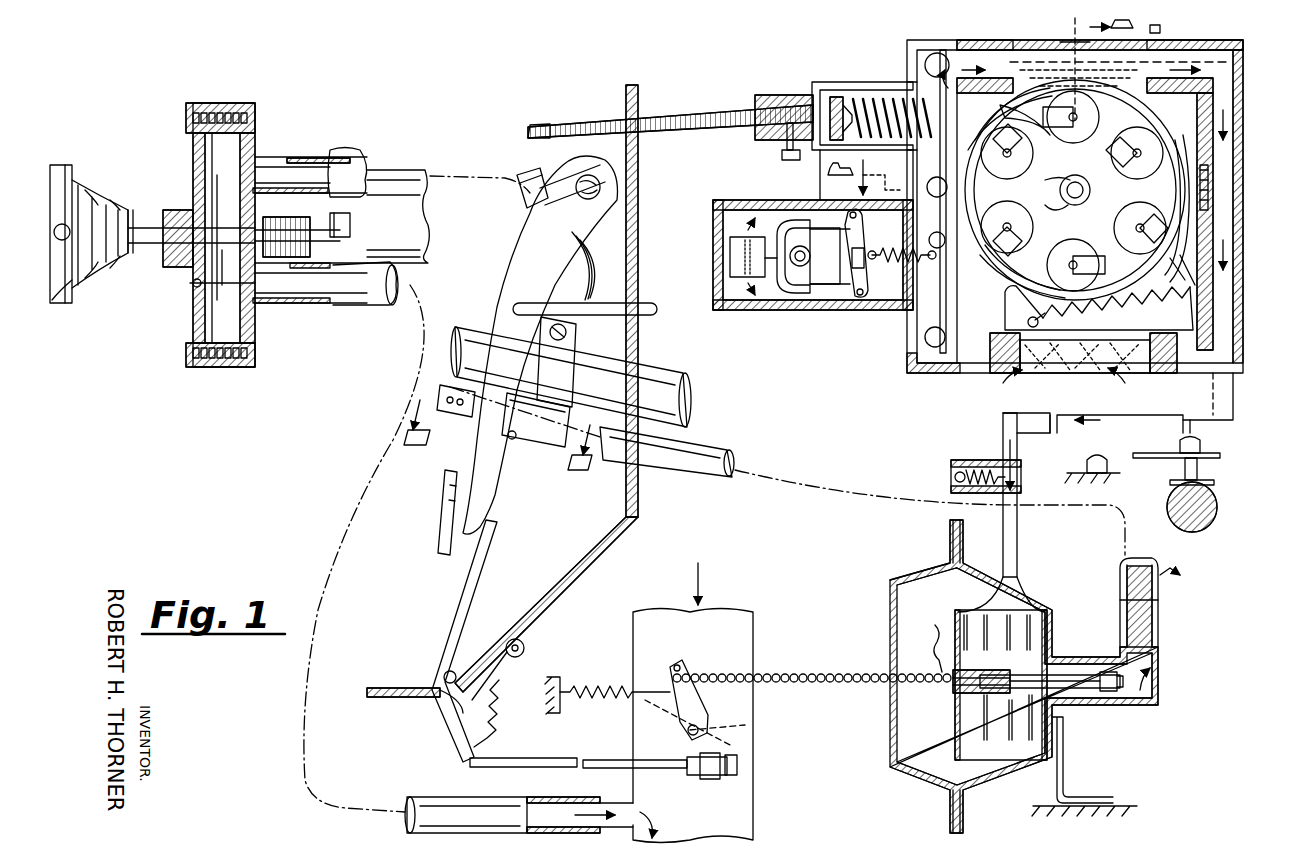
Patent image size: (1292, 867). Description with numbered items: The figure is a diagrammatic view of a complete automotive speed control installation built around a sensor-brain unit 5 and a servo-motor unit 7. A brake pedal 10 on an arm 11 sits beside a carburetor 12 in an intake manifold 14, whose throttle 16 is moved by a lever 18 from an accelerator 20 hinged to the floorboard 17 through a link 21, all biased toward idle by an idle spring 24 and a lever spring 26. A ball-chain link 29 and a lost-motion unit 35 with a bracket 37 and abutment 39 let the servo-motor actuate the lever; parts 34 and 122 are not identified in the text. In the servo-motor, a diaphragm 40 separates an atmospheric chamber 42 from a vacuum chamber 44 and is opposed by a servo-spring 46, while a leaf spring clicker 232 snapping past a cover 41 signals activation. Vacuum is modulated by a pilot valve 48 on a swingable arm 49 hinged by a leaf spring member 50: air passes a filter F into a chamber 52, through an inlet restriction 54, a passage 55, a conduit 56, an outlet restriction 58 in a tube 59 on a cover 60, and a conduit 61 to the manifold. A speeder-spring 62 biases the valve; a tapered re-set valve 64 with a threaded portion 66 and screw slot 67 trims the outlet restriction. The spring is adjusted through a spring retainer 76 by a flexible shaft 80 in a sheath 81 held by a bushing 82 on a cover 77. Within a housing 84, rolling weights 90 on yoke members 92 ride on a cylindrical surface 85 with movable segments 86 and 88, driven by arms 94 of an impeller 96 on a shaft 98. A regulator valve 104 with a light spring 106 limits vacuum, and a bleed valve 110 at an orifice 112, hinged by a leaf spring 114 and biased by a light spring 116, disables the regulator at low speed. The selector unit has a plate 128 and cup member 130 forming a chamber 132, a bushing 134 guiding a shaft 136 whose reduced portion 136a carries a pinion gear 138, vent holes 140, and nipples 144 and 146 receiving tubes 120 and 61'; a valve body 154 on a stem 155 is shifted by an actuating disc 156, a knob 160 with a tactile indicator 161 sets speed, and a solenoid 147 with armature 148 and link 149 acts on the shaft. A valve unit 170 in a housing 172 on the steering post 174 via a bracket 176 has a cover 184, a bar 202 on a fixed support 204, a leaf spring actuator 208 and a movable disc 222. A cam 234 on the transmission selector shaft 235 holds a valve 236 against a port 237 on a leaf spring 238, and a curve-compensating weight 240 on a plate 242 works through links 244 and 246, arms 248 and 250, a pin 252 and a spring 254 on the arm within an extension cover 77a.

The sensor-brain unit 5 is at (905, 75).
The servo-motor unit 7 is at (893, 578).
The brake pedal 10 is at (440, 525).
The arm 11 is at (505, 258).
The carburetor 12 is at (755, 703).
The engine intake passage or manifold 14 is at (720, 817).
The throttle 16 is at (735, 728).
The floorboard 17 is at (632, 534).
The lever 18 is at (688, 734).
The accelerator 20 is at (478, 560).
The shaft or link 21 is at (537, 758).
The idle spring 24 is at (500, 680).
The lever spring 26 is at (595, 698).
The ball-chain link 29 is at (800, 673).
The pawl 34 is at (670, 688).
The second override or lost-motion unit 35 is at (692, 775).
The U-shaped member or bracket 37 is at (720, 777).
The abutment 39 is at (735, 765).
The diaphragm 40 is at (956, 708).
The cover 41 is at (892, 614).
The chamber 42 is at (900, 592).
The chamber 44 is at (1020, 595).
The servo-spring 46 is at (1015, 745).
The pilot valve 48 is at (907, 50).
The swingable arm 49 is at (935, 180).
The leaf spring member 50 is at (935, 320).
The chamber 52 is at (1160, 355).
The inlet orifice or restriction 54 is at (947, 55).
The passage 55 is at (1230, 70).
The conduit or passage 56 is at (1005, 425).
The outlet orifice or restriction 58 is at (1100, 705).
The tube 59 is at (1062, 658).
The cover 60 is at (1055, 615).
The conduit or passage 61 is at (903, 537).
The tube 61' is at (441, 206).
The speeder-spring 62 is at (868, 98).
The re-set valve 64 is at (1065, 690).
The threaded portion 66 is at (985, 693).
The screw slot 67 is at (1125, 680).
The spring retainer 76 is at (836, 100).
The cover 77 is at (765, 95).
The extension cover 77a is at (720, 270).
The flexible shaft 80 is at (535, 130).
The sheath 81 is at (700, 112).
The bushing 82 is at (755, 132).
The housing 84 is at (965, 373).
The cylindrical surface 85 is at (1062, 118).
The segment 86 is at (998, 118).
The segment 88 is at (1178, 145).
The rolling weights 90 is at (1062, 95).
The yoke member 92 is at (1060, 150).
The arm 94 is at (1170, 273).
The rotatable spider or impeller 96 is at (1089, 190).
The rotating shaft 98 is at (1063, 192).
The relief or regulator valve 104 is at (953, 480).
The light spring 106 is at (970, 470).
The valve 110 is at (1210, 182).
The orifice 112 is at (1210, 195).
The leaf spring 114 is at (1215, 312).
The light spring 116 is at (1095, 312).
The tube 120 is at (372, 296).
The valve body 122 is at (290, 96).
The plate 128 is at (197, 126).
The cover or cup member 130 is at (255, 142).
The chamber 132 is at (215, 165).
The bushing 134 is at (170, 212).
The shaft 136 is at (150, 246).
The reduced-diameter portion 136a is at (401, 216).
The pinion gear 138 is at (300, 300).
The air vent holes 140 is at (264, 226).
The hose nipple 144 is at (290, 306).
The hose nipple 146 is at (290, 157).
The solenoid 147 is at (430, 174).
The armature 148 is at (345, 214).
The link 149 is at (383, 262).
The valve body 154 is at (255, 318).
The stem or shaft 155 is at (196, 288).
The actuating disc 156 is at (226, 190).
The knob 160 is at (85, 275).
The tactile indicator 161 is at (58, 228).
The valve unit 170 is at (452, 478).
The housing 172 is at (566, 408).
The steering post 174 is at (660, 395).
The bracket 176 is at (560, 316).
The cover 184 is at (490, 448).
The bar 202 is at (458, 412).
The fixed support 204 is at (430, 440).
The leaf spring actuator 208 is at (578, 472).
The movable disc 222 is at (515, 440).
The leaf spring clicker 232 is at (935, 625).
The cam 234 is at (1178, 488).
The transmission selector shaft 235 is at (1207, 517).
The valve 236 is at (1202, 447).
The port 237 is at (1233, 418).
The leaf spring 238 is at (1115, 443).
The weight 240 is at (740, 245).
The plate 242 is at (782, 268).
The link 244 is at (867, 233).
The link 246 is at (828, 287).
The arm 248 is at (862, 237).
The arm 250 is at (862, 282).
The pin 252 is at (852, 258).
The spring 254 is at (895, 263).
The filter F is at (1085, 372).